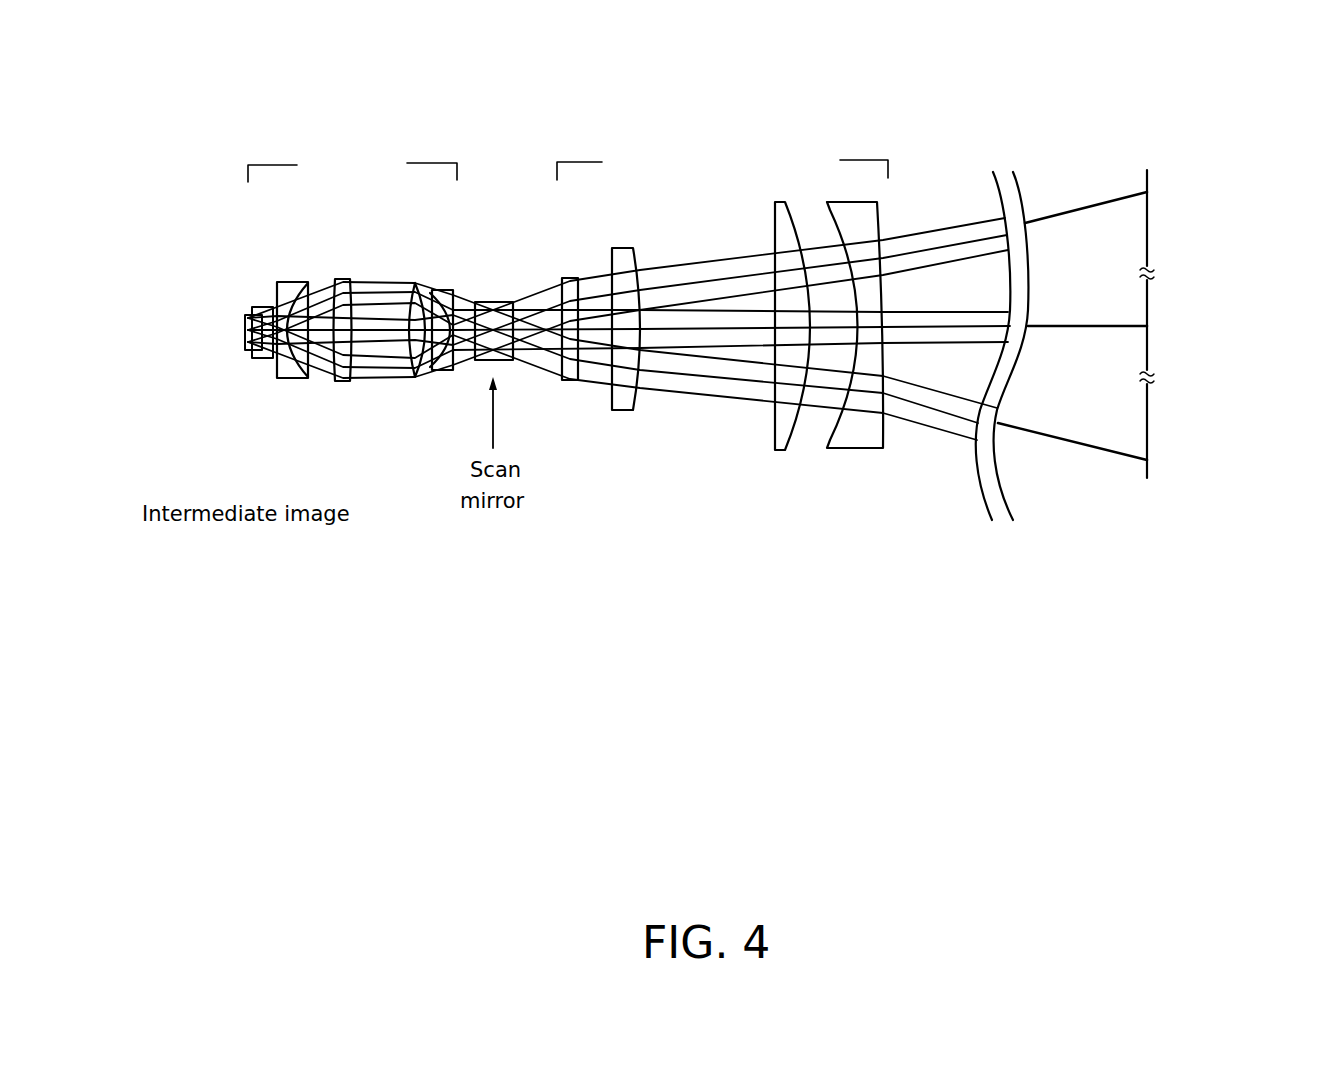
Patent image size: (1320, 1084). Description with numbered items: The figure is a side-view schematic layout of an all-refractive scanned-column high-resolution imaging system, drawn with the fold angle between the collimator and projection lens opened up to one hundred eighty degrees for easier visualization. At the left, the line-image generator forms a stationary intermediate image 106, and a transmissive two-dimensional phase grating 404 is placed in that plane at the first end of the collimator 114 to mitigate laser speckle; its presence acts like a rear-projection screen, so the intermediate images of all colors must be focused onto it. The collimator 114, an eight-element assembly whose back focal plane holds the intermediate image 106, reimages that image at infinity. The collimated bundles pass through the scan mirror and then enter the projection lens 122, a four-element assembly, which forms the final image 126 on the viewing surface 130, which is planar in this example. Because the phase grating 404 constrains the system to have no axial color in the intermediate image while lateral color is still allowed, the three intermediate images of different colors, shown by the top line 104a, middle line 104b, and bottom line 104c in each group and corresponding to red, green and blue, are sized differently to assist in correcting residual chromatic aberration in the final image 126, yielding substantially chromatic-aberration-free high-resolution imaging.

The top line 104a is at (933, 216).
The middle line 104b is at (945, 229).
The bottom line 104c is at (956, 241).
The intermediate image 106 is at (243, 372).
The collimator 114 is at (352, 149).
The projection lens 122 is at (719, 161).
The final image 126 is at (1206, 266).
The viewing surface 130 is at (1148, 425).
The phase grating 404 is at (250, 327).